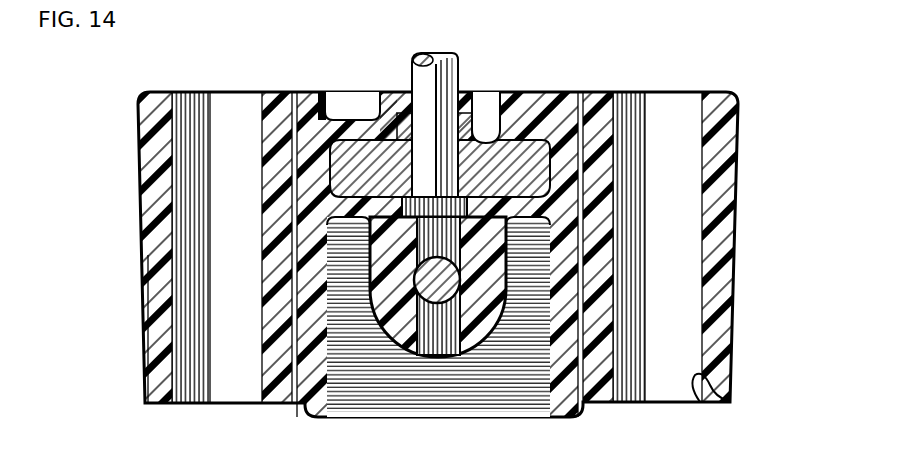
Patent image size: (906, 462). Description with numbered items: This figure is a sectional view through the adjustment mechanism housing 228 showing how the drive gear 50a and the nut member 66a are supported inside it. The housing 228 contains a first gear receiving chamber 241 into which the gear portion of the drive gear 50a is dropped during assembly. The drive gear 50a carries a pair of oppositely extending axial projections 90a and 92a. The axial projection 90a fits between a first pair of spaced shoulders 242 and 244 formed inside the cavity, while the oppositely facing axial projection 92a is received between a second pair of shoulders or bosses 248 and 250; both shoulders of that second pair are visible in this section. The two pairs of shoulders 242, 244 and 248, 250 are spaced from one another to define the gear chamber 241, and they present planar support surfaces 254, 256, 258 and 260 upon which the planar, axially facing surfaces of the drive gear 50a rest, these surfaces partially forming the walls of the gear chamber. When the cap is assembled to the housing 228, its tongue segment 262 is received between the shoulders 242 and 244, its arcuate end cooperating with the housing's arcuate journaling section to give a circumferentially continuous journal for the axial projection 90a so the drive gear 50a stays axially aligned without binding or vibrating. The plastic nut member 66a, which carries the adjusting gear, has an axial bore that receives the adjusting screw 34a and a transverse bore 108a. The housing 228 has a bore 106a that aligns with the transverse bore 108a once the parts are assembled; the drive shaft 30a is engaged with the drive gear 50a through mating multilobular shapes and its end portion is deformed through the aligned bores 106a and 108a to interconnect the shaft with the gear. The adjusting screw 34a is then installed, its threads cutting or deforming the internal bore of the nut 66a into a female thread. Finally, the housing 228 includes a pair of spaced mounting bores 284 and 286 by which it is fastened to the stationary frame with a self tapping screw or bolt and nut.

The drive shaft 30a is at (423, 53).
The adjusting screw 34a is at (386, 312).
The drive gear 50a is at (340, 163).
The nut member 66a is at (535, 290).
The axial projection 90a is at (474, 93).
The axial projection 92a is at (320, 262).
The bore 106a is at (420, 333).
The transverse bore 108a is at (452, 313).
The housing 228 is at (735, 106).
The gear receiving chamber 241 is at (640, 108).
The shoulder 242 is at (378, 118).
The shoulder 244 is at (552, 93).
The shoulder 248 is at (560, 268).
The shoulder 250 is at (328, 200).
The planar support surface 254 is at (392, 112).
The planar support surface 256 is at (507, 125).
The planar support surface 258 is at (300, 238).
The planar support surface 260 is at (575, 205).
The tongue segment 262 is at (482, 328).
The mounting bore 284 is at (188, 402).
The mounting bore 286 is at (690, 395).